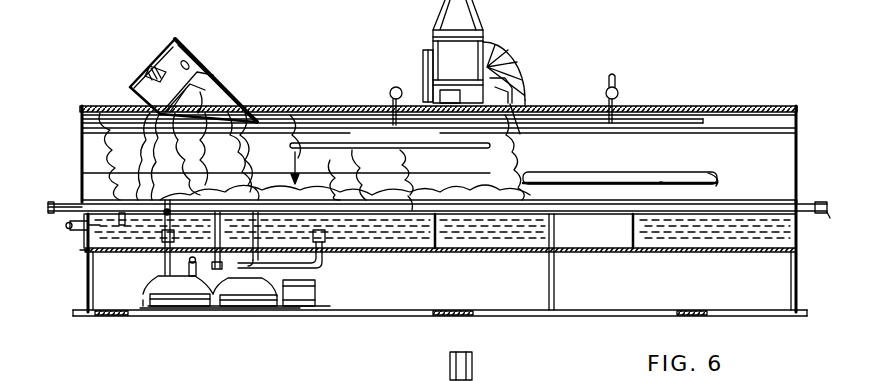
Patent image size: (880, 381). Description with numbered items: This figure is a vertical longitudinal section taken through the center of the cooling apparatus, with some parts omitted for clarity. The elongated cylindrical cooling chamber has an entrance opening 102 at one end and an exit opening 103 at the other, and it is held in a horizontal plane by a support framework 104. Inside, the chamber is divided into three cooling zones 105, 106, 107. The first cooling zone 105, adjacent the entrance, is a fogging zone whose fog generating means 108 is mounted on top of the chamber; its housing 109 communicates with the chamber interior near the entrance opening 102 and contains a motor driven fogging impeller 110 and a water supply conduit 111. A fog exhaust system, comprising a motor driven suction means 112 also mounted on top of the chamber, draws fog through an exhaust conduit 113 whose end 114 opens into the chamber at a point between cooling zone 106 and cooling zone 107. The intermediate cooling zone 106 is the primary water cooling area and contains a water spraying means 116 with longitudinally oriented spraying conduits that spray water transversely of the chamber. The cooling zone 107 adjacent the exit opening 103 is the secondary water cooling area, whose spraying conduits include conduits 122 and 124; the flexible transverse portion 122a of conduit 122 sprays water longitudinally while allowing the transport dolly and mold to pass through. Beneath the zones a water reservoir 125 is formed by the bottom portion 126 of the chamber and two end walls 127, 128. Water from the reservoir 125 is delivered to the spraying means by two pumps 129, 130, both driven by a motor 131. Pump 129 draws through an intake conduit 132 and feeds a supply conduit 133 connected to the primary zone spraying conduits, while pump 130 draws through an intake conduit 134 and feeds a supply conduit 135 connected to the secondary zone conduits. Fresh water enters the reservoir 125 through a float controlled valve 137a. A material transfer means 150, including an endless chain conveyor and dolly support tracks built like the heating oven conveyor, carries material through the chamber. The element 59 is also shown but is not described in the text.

The strainer 59 is at (122, 212).
The entrance opening 102 is at (92, 151).
The exit opening 103 is at (780, 165).
The support framework 104 is at (565, 311).
The cooling zone 105 is at (160, 163).
The cooling zone 106 is at (286, 163).
The cooling zone 107 is at (621, 173).
The fog generating means 108 is at (213, 74).
The housing 109 is at (230, 90).
The fogging impeller 110 is at (172, 70).
The water supply conduit 111 is at (188, 66).
The suction means 112 is at (483, 40).
The exhaust conduit 113 is at (523, 88).
The end of exhaust conduit 114 is at (520, 134).
The water spraying means 116 is at (438, 133).
The spraying conduit 122 is at (664, 184).
The transverse portion 122a is at (720, 188).
The spraying conduit 124 is at (700, 124).
The water reservoir 125 is at (394, 196).
The bottom portion 126 is at (472, 249).
The end wall 127 is at (80, 248).
The end wall 128 is at (798, 231).
The pump 129 is at (260, 306).
The pump 130 is at (157, 283).
The motor 131 is at (315, 282).
The intake conduit 132 is at (326, 239).
The supply conduit 133 is at (392, 90).
The intake conduit 134 is at (156, 229).
The supply conduit 135 is at (620, 90).
The float controlled valve 137a is at (83, 229).
The material transfer means 150 is at (822, 202).